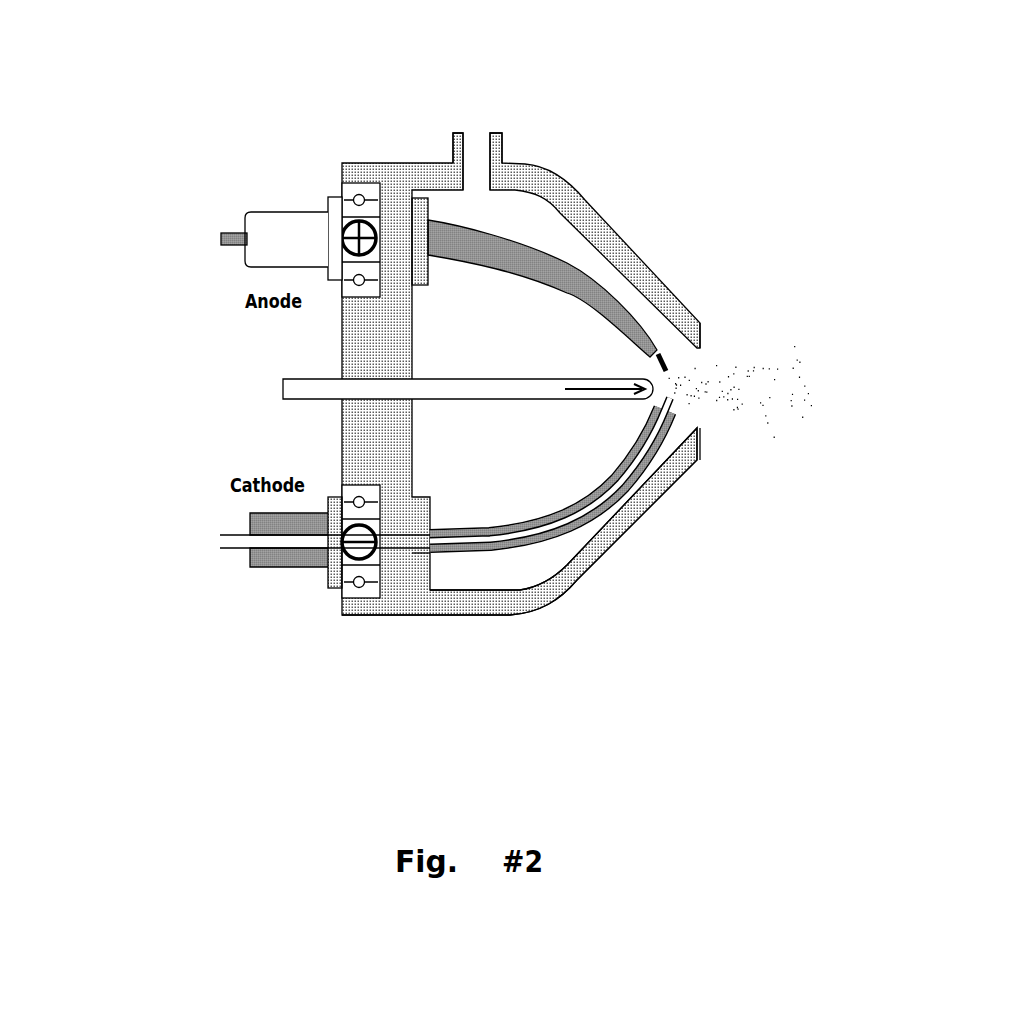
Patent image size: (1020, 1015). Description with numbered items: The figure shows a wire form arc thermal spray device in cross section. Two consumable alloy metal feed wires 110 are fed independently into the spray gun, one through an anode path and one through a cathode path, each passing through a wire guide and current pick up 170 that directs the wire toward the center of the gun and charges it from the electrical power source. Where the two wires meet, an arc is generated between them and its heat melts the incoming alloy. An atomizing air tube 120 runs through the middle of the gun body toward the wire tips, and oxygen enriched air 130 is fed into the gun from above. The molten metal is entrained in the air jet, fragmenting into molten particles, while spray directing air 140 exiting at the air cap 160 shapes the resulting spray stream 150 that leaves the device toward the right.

The feed wire 110 is at (232, 230).
The atomizing air tube 120 is at (262, 392).
The oxygen enriched air 130 is at (478, 125).
The spray directing air 140 is at (703, 360).
The spray stream 150 is at (768, 420).
The air cap 160 is at (672, 496).
The wire guide and current pick up 170 is at (581, 521).